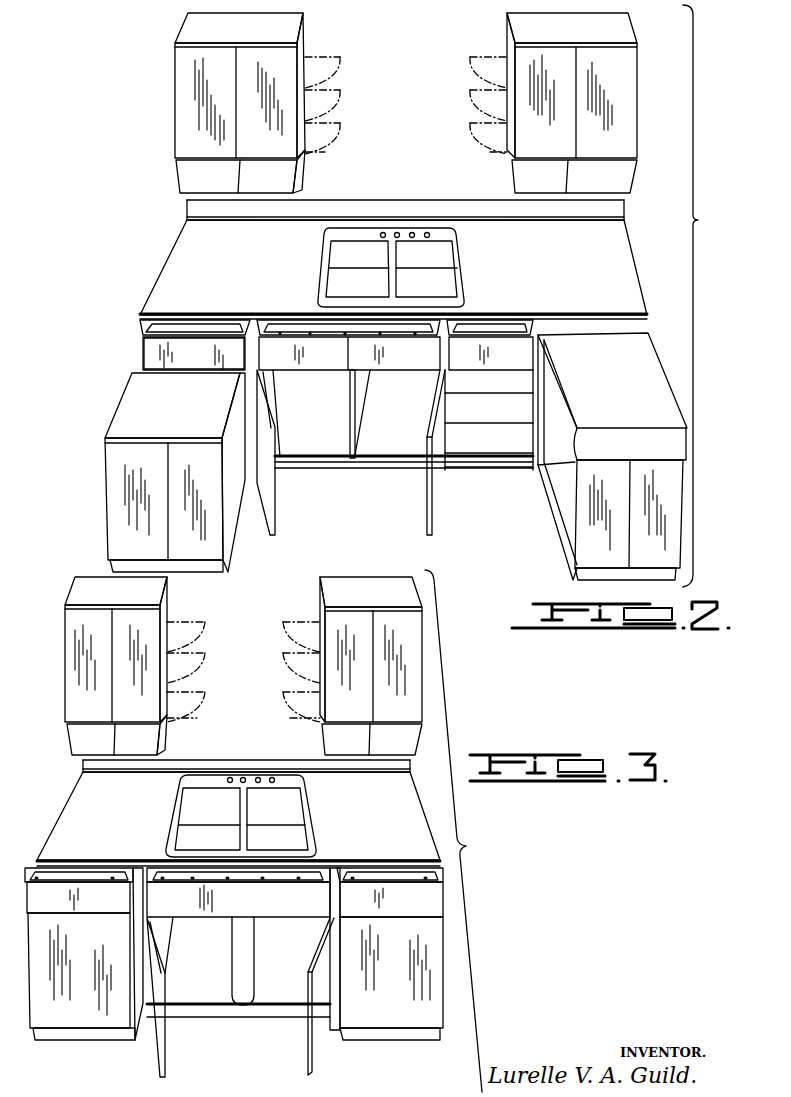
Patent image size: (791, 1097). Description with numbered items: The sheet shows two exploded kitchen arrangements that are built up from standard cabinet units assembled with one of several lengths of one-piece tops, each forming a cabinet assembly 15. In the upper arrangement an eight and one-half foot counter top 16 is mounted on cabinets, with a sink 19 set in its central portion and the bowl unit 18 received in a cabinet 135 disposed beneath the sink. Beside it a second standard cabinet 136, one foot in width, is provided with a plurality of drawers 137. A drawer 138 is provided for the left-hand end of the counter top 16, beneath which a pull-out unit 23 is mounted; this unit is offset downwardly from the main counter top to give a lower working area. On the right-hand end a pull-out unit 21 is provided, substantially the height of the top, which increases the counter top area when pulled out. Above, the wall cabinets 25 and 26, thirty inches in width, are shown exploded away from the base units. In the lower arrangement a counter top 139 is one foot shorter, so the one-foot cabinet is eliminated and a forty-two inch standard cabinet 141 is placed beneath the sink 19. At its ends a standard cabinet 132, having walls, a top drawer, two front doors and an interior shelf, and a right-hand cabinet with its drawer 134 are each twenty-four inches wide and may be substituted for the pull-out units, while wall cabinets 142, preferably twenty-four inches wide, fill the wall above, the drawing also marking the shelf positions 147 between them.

In FIG. 2, the cabinet assembly 15 is at (638, 247).
In FIG. 2, the counter top 16 is at (178, 249).
In FIG. 2, the bowl unit 18 is at (440, 254).
In FIG. 2, the sink 19 is at (463, 275).
In FIG. 3, the sink 19 is at (305, 812).
In FIG. 2, the pull-out unit 21 is at (652, 368).
In FIG. 2, the pull-out unit 23 is at (125, 408).
In FIG. 2, the wall cabinet 25 is at (300, 44).
In FIG. 2, the wall cabinet 26 is at (303, 168).
In FIG. 2, the cabinet 135 is at (385, 462).
In FIG. 2, the second standard cabinet 136 is at (487, 463).
In FIG. 2, the drawers 137 is at (462, 388).
In FIG. 2, the drawer 138 is at (205, 348).
In FIG. 3, the counter top 139 is at (415, 810).
In FIG. 3, the standard cabinet 141 is at (283, 1012).
In FIG. 3, the wall cabinets 142 is at (170, 604).
In FIG. 3, the wall cabinet shelves 147 is at (289, 701).
In FIG. 3, the cabinet 132 is at (85, 1025).
In FIG. 3, the drawer 134 is at (393, 1020).